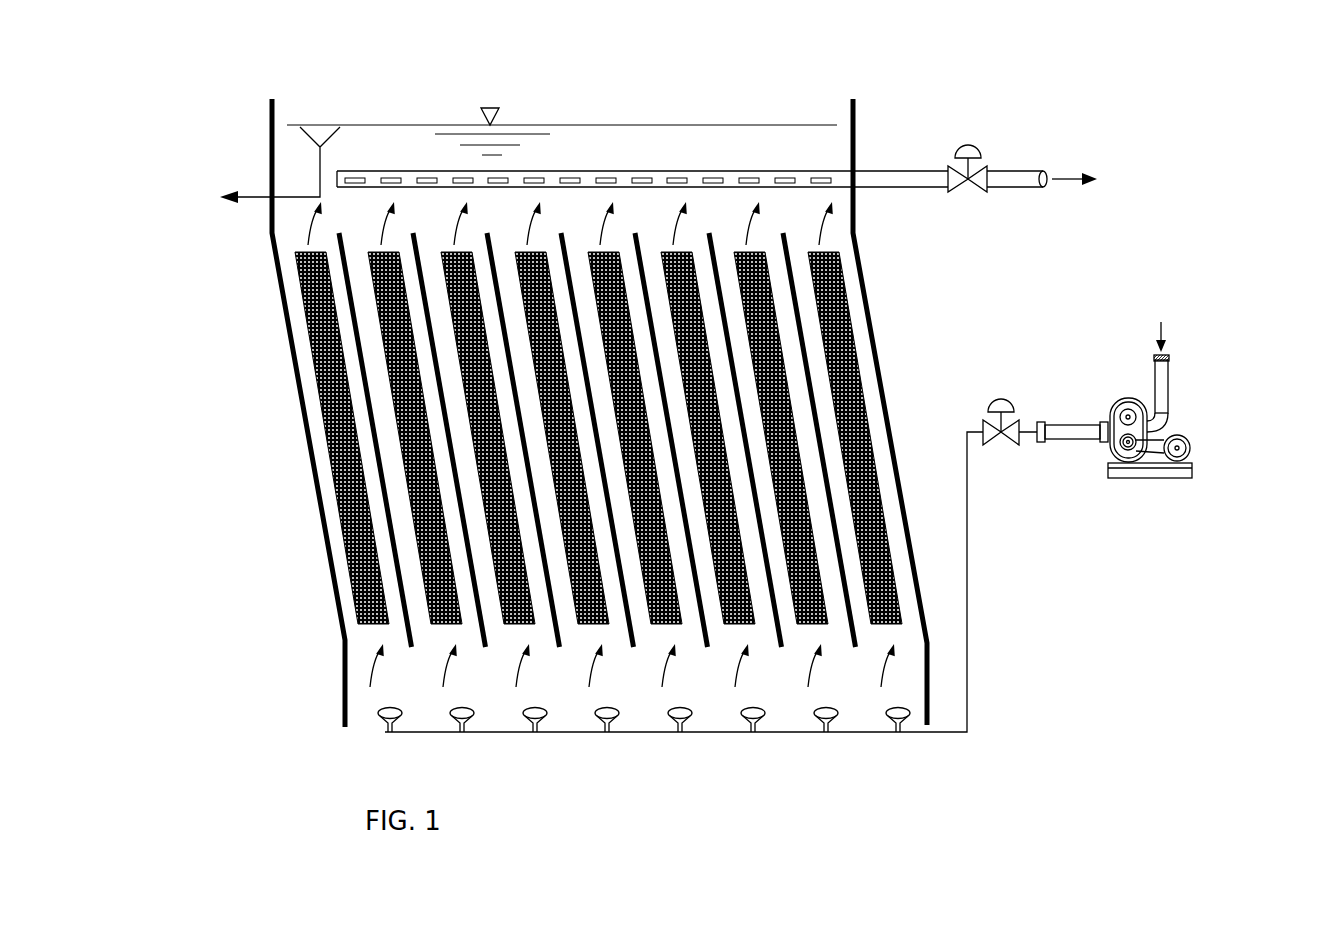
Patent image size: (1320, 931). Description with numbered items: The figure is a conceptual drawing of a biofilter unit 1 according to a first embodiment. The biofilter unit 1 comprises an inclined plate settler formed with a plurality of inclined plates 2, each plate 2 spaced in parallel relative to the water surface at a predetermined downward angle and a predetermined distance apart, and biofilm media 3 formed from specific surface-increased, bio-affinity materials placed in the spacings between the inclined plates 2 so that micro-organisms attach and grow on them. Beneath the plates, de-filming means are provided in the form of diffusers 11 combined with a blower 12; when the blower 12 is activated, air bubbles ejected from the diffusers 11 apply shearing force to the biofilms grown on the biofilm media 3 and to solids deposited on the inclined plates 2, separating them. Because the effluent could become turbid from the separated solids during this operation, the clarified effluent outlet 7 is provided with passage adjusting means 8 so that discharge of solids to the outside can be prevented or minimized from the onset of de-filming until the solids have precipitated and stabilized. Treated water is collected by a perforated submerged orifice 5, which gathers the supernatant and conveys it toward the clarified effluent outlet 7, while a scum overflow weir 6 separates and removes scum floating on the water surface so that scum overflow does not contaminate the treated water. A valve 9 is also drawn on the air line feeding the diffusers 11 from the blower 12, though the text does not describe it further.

The biofilter unit 1 is at (290, 338).
The inclined plate 2 is at (467, 552).
The biofilm media 3 is at (397, 437).
The perforated submerged orifice 5 is at (668, 170).
The scum overflow weir 6 is at (314, 133).
The clarified effluent outlet 7 is at (885, 177).
The passage adjusting means 8 is at (968, 150).
The air control valve 9 is at (1009, 447).
The diffuser 11 is at (758, 730).
The blower 12 is at (1130, 470).